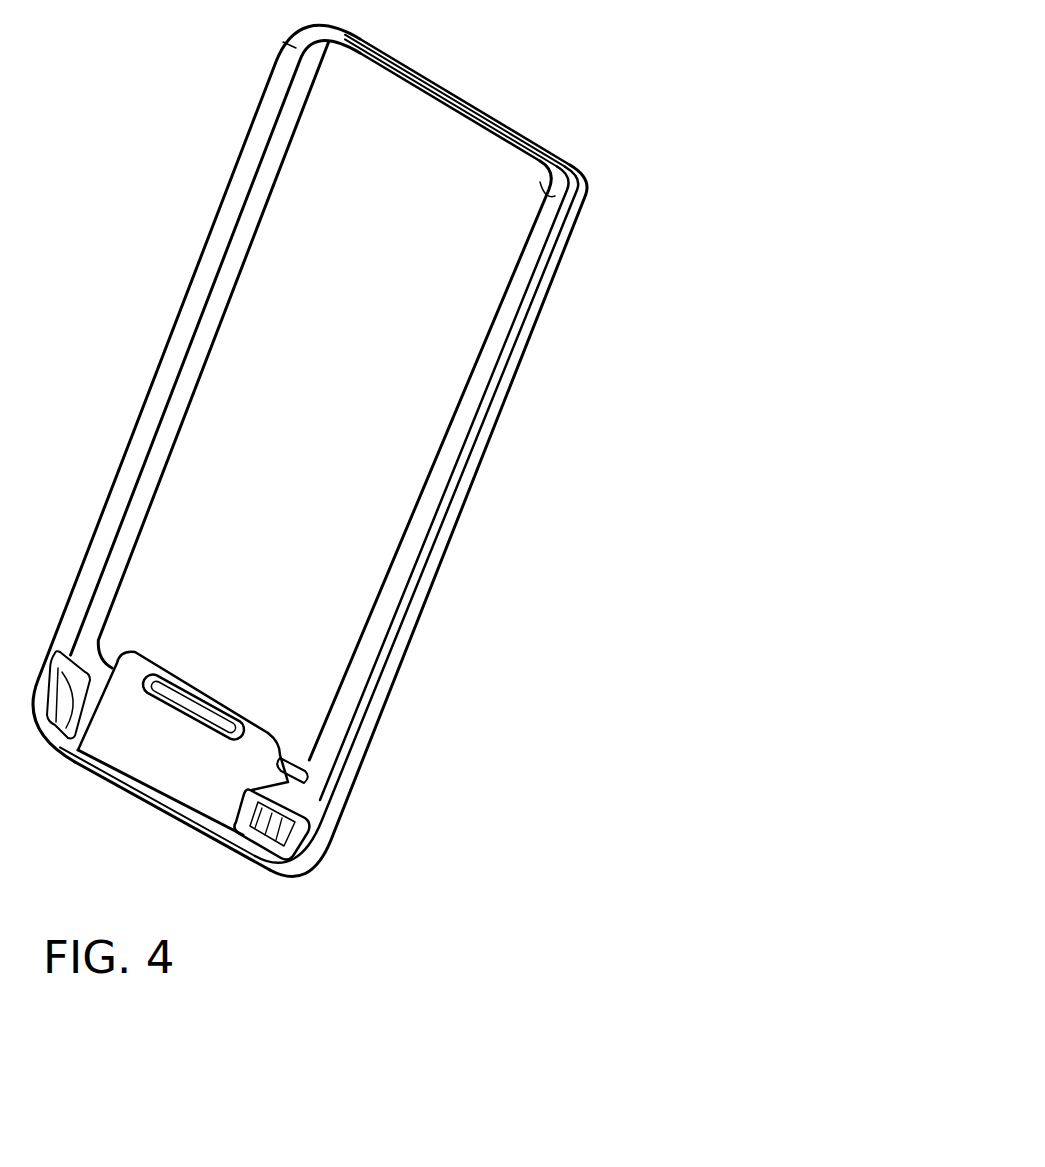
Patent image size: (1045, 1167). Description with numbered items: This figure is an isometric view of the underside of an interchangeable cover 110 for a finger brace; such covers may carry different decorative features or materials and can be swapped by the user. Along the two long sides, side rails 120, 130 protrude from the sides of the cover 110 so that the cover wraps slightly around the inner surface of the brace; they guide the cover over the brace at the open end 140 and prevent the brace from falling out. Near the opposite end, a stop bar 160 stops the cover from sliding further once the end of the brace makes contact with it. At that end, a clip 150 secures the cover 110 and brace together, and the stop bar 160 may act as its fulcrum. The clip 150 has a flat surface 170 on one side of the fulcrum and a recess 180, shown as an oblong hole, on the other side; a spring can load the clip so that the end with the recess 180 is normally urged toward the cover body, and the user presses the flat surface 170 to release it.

The interchangeable cover 110 is at (388, 325).
The side rail 120 is at (545, 222).
The side rail 130 is at (275, 90).
The open end 140 is at (512, 117).
The clip 150 is at (277, 735).
The stop bar 160 is at (282, 765).
The flat surface 170 is at (172, 767).
The recess 180 is at (195, 715).